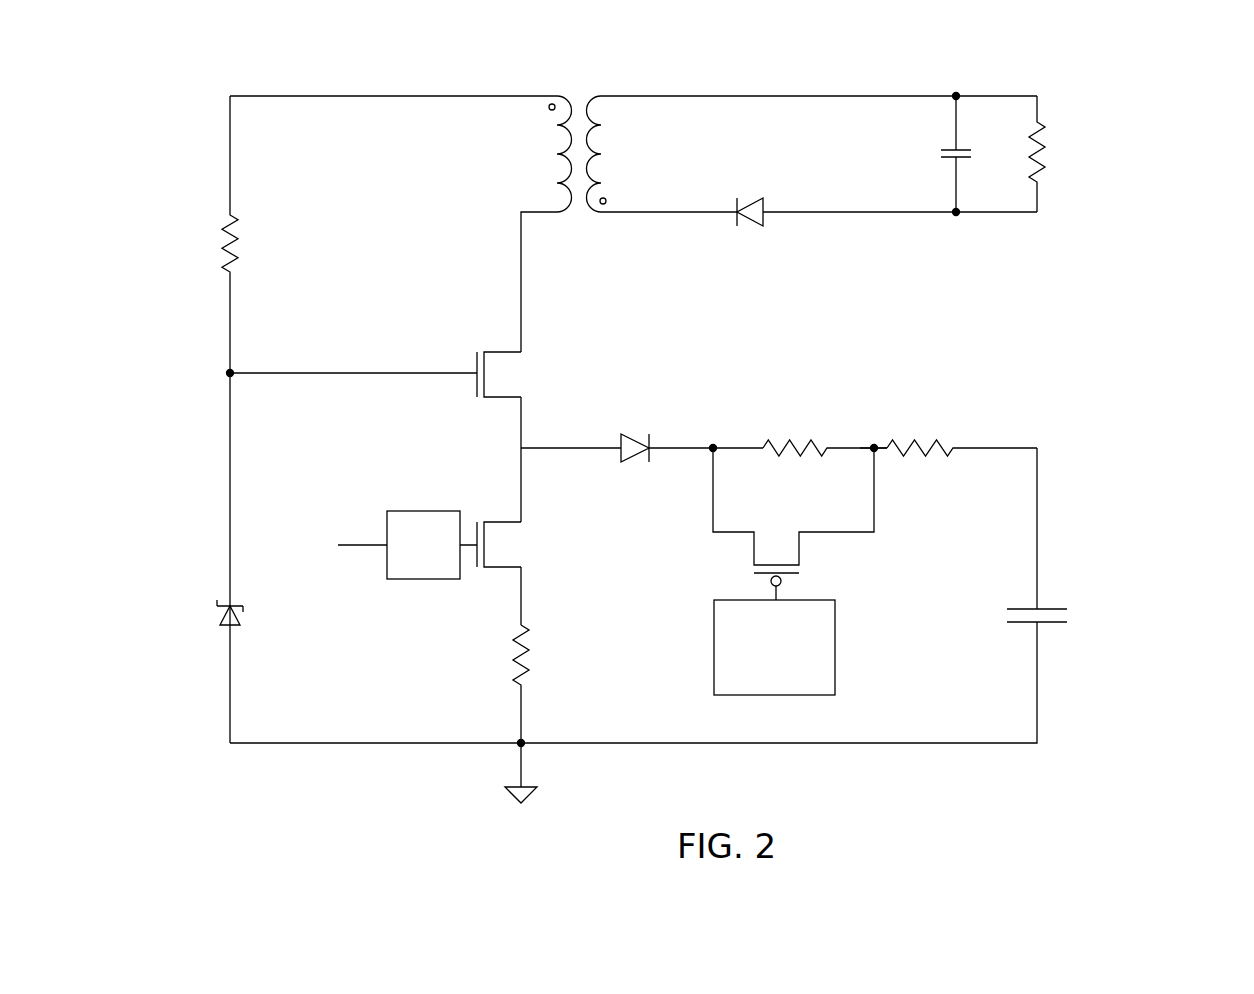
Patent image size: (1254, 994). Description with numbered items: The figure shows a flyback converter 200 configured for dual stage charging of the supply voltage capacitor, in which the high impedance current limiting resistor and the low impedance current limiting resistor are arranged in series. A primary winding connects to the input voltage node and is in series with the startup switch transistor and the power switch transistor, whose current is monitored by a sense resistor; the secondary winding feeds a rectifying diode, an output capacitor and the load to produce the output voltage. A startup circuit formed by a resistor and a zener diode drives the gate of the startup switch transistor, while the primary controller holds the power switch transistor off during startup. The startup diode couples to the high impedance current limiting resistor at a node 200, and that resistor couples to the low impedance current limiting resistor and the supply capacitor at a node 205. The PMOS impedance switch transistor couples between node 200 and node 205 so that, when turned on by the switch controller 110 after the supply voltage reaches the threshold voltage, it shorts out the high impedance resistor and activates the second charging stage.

The flyback converter / node 200 is at (500, 69).
The node 205 is at (874, 446).
The switch controller 110 is at (835, 648).